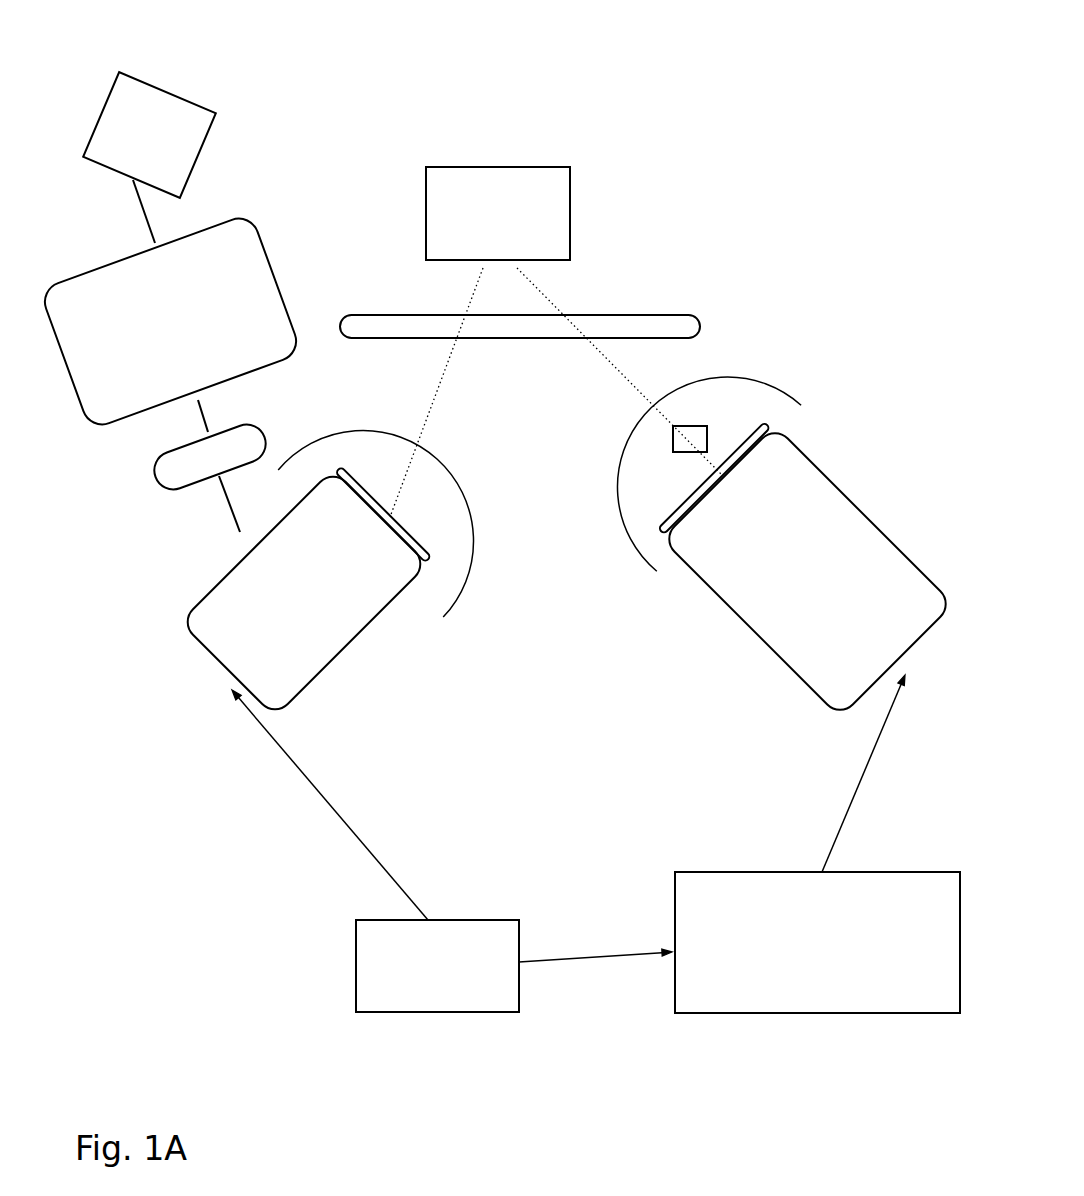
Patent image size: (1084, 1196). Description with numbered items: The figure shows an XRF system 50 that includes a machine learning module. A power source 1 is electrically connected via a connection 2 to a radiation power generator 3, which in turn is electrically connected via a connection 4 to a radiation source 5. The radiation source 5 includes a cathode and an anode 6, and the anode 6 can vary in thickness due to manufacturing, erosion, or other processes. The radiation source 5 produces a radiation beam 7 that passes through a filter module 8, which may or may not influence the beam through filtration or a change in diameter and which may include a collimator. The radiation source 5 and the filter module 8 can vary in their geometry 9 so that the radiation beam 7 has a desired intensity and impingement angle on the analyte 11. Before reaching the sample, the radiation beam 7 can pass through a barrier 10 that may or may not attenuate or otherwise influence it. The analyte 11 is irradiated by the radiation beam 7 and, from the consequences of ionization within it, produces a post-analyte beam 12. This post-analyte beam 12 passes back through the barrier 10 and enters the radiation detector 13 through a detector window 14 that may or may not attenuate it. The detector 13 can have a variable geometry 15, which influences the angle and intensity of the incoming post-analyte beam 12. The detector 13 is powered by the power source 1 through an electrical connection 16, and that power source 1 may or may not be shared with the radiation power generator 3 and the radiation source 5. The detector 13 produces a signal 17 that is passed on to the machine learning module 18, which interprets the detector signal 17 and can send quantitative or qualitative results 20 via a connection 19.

The power source 1 is at (370, 917).
The connection 2 is at (638, 953).
The radiation power generator 3 is at (687, 1008).
The connection 4 is at (842, 817).
The radiation source 5 is at (887, 518).
The anode 6 is at (757, 462).
The radiation beam 7 is at (597, 357).
The filter module 8 is at (690, 418).
The geometry 9 is at (773, 388).
The barrier 10 is at (667, 303).
The analyte 11 is at (558, 160).
The post-analyte beam 12 is at (427, 380).
The radiation detector 13 is at (237, 550).
The detector window 14 is at (342, 497).
The geometry 15 is at (477, 575).
The electrical connection 16 is at (333, 802).
The signal 17 is at (145, 507).
The machine learning module 18 is at (113, 430).
The connection 19 is at (148, 227).
The results 20 is at (145, 75).
The system 50 is at (228, 912).